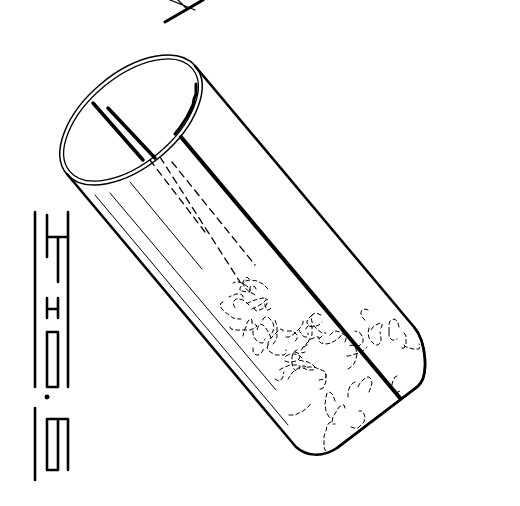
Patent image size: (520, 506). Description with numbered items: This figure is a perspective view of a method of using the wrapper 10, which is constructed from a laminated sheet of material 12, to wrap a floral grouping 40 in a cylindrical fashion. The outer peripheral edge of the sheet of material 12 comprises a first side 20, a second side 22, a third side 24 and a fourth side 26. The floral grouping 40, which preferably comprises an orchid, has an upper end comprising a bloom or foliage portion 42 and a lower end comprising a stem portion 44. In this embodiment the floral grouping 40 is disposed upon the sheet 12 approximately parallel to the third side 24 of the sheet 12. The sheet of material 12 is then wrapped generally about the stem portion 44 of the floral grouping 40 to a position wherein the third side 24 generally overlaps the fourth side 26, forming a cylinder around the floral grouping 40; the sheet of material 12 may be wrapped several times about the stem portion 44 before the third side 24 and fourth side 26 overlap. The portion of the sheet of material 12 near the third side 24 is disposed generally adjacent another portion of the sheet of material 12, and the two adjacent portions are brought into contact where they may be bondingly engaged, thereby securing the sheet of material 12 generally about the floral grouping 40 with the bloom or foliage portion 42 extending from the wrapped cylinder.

The wrapper 10 is at (226, 371).
The sheet of material 12 is at (197, 329).
The first side 20 is at (68, 125).
The second side 22 is at (424, 361).
The third side 24 is at (205, 157).
The fourth side 26 is at (197, 68).
The floral grouping 40 is at (392, 286).
The bloom or foliage portion 42 is at (386, 421).
The stem portion 44 is at (118, 110).